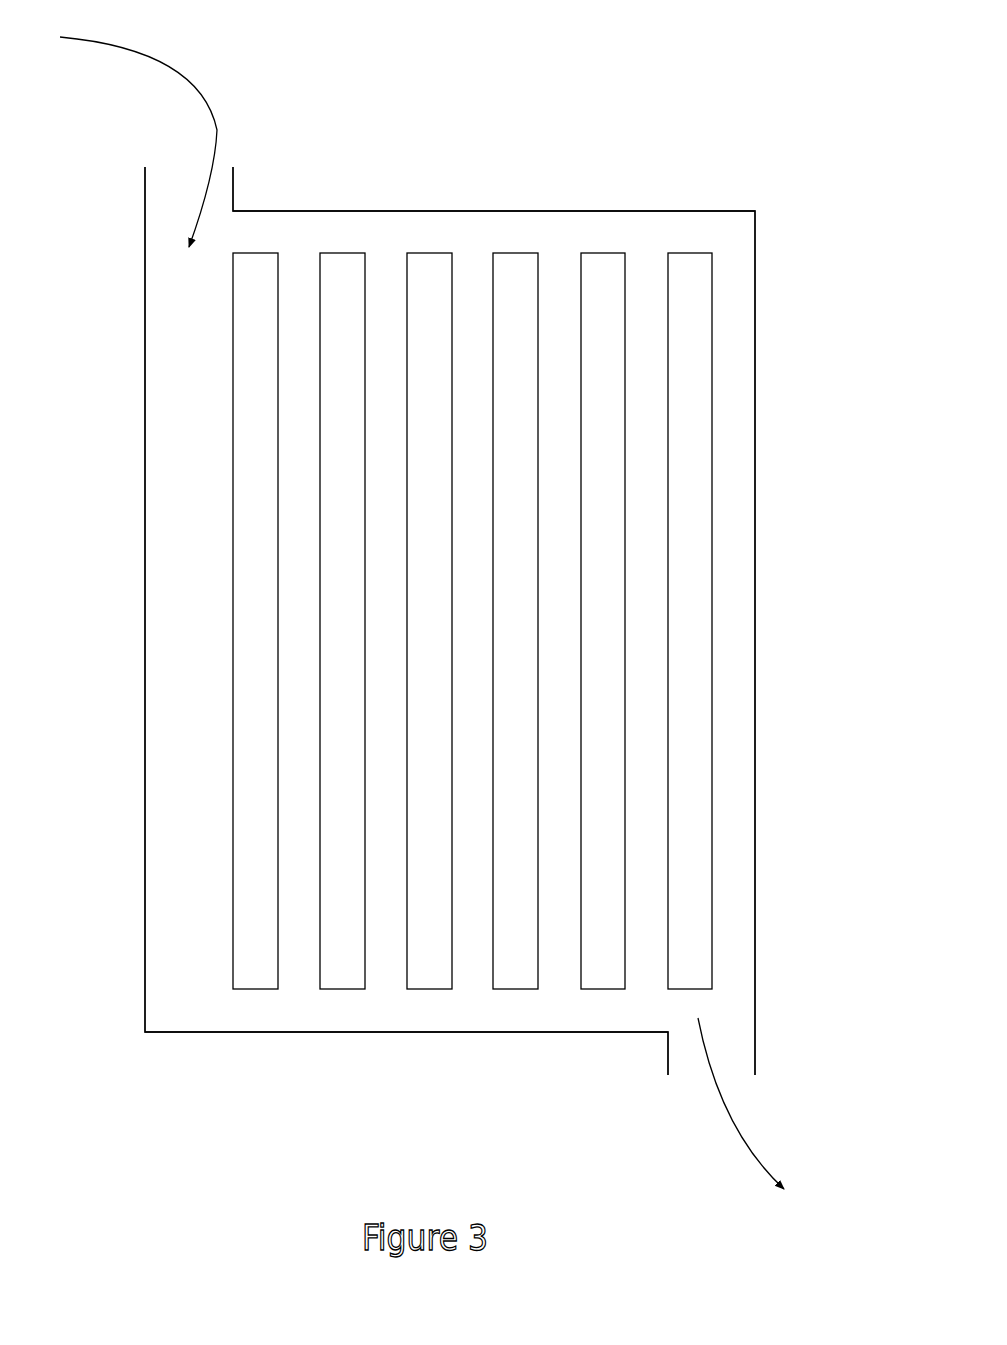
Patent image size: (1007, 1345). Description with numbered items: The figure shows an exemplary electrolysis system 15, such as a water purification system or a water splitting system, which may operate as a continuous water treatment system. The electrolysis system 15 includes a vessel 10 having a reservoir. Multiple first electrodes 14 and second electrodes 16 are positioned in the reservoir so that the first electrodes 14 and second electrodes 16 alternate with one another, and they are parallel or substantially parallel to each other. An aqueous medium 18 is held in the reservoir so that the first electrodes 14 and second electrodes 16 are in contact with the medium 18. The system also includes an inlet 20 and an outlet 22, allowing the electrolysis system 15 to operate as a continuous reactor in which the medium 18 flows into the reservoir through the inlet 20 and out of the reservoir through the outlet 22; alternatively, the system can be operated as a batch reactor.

The electrolysis system 15 is at (594, 152).
The vessel 10 is at (363, 211).
The aqueous medium 18 is at (178, 588).
The inlet 20 is at (261, 172).
The outlet 22 is at (639, 1061).
The first electrodes 14 is at (233, 930).
The second electrodes 16 is at (320, 923).